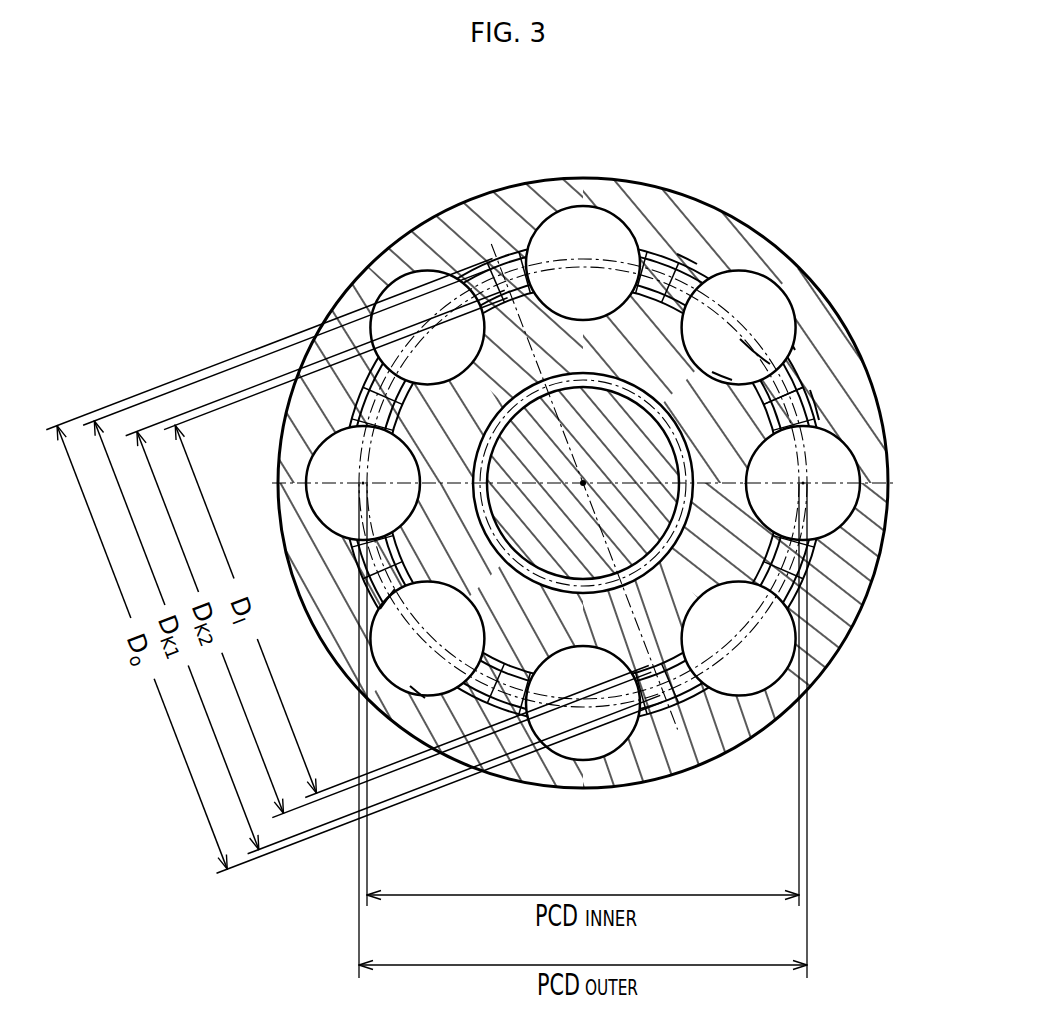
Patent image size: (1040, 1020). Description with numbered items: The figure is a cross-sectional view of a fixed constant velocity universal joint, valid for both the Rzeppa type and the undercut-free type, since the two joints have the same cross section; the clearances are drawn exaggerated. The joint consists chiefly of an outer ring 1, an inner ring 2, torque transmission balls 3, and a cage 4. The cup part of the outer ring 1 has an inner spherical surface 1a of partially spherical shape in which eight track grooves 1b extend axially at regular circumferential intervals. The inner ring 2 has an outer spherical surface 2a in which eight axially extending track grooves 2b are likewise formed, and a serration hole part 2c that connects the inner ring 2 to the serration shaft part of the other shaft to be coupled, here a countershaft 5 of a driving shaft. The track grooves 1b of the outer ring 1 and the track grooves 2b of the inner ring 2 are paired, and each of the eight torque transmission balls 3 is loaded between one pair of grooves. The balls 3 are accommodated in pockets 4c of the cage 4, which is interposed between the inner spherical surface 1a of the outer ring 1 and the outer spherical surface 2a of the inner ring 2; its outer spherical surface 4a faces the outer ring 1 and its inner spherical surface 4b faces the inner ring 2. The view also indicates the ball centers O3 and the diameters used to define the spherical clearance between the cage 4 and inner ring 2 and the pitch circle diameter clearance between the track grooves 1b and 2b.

The outer ring 1 is at (412, 202).
The inner spherical surface 1a is at (395, 589).
The track grooves 1b is at (410, 686).
The inner ring 2 is at (770, 364).
The outer spherical surface 2a is at (697, 264).
The track grooves 2b is at (732, 378).
The serration hole part 2c is at (632, 399).
The torque transmission balls 3 is at (313, 443).
The cage 4 is at (814, 406).
The outer spherical surface 4a is at (818, 418).
The inner spherical surface 4b is at (795, 350).
The pockets 4c is at (807, 403).
The countershaft 5 is at (657, 528).
The ball center O3 is at (806, 479).